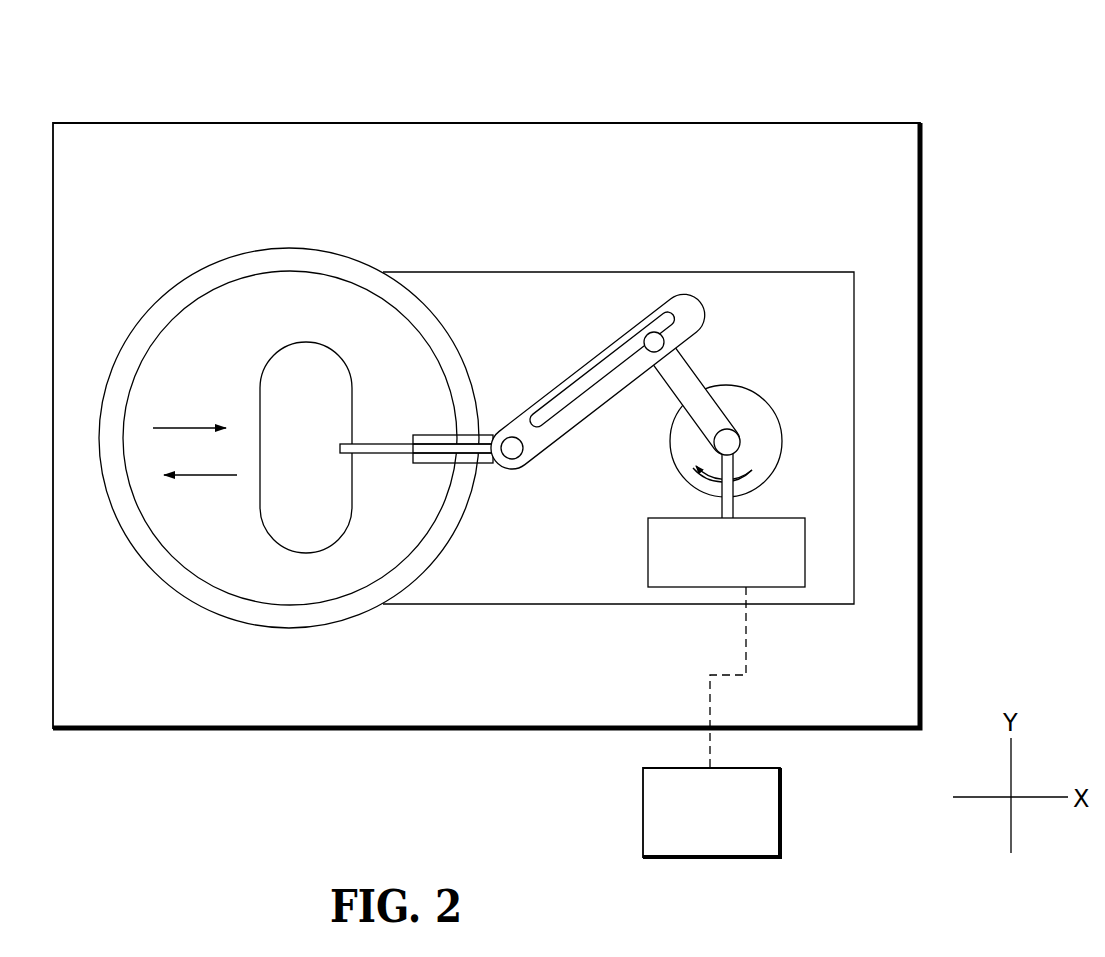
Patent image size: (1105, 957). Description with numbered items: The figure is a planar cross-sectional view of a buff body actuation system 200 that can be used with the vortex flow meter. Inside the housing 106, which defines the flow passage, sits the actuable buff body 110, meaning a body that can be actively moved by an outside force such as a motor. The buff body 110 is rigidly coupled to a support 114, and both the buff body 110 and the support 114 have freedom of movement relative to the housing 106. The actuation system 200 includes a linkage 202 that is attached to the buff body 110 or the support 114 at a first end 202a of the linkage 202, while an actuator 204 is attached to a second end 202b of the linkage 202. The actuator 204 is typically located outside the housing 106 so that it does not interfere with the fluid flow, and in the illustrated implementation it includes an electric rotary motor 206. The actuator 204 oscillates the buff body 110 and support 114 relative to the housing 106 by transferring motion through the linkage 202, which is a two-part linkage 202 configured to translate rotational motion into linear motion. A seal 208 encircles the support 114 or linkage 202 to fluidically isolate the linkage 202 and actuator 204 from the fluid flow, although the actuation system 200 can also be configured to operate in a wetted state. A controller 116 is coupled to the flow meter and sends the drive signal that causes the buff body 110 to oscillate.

The buff body actuation system 200 is at (529, 98).
The housing 106 is at (290, 258).
The actuable buff body 110 is at (272, 382).
The support 114 is at (363, 453).
The controller 116 is at (732, 827).
The linkage 202 is at (640, 312).
The first end of the linkage 202a is at (512, 460).
The second end of the linkage 202b is at (740, 440).
The actuator 204 is at (826, 552).
The electric rotary motor 206 is at (660, 552).
The seal 208 is at (443, 467).